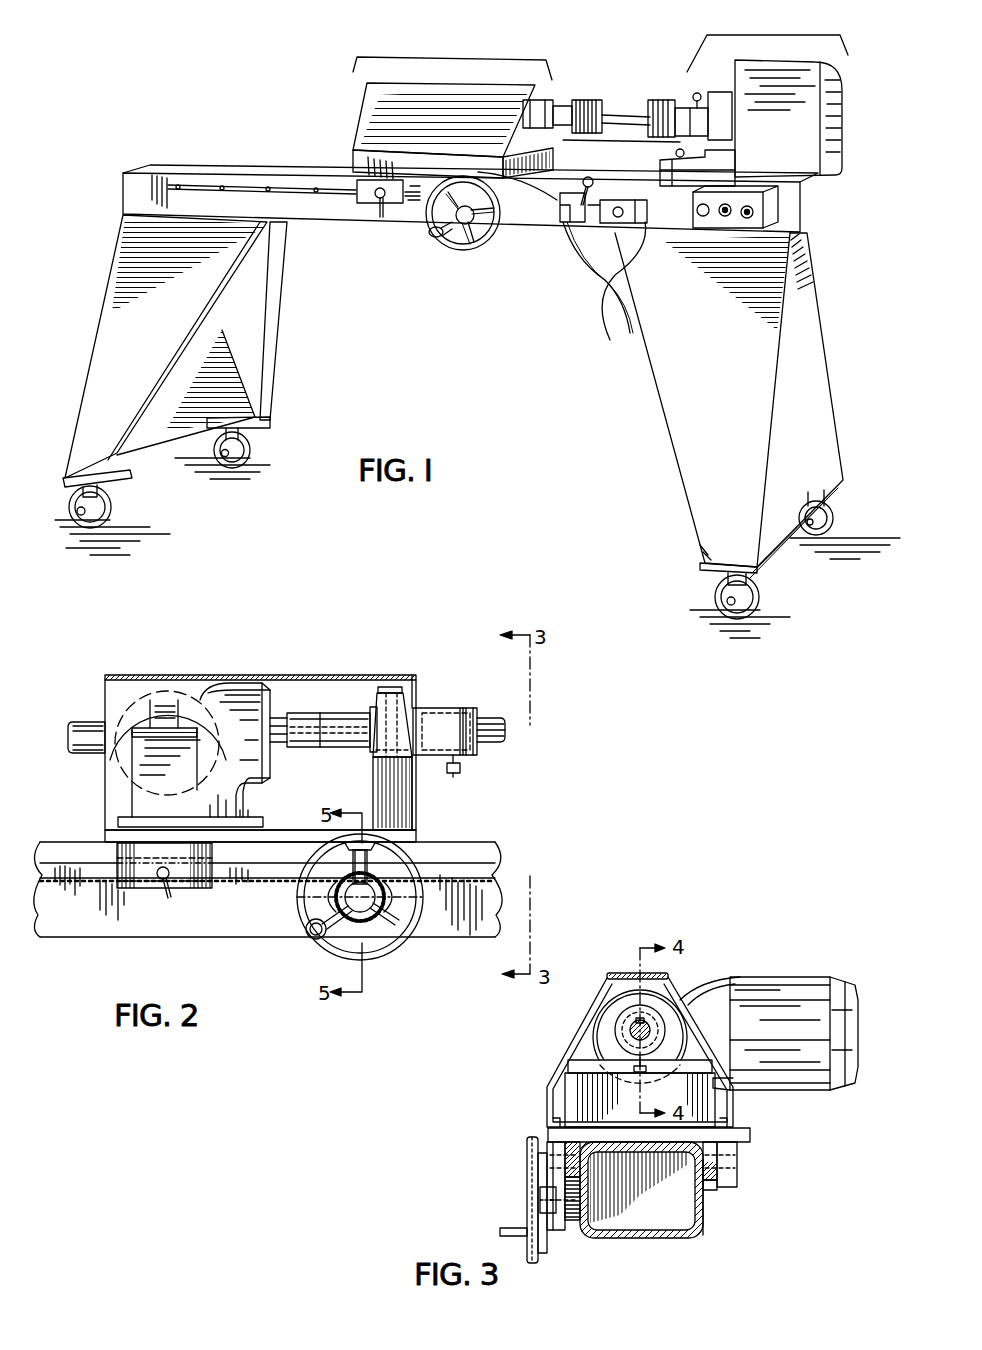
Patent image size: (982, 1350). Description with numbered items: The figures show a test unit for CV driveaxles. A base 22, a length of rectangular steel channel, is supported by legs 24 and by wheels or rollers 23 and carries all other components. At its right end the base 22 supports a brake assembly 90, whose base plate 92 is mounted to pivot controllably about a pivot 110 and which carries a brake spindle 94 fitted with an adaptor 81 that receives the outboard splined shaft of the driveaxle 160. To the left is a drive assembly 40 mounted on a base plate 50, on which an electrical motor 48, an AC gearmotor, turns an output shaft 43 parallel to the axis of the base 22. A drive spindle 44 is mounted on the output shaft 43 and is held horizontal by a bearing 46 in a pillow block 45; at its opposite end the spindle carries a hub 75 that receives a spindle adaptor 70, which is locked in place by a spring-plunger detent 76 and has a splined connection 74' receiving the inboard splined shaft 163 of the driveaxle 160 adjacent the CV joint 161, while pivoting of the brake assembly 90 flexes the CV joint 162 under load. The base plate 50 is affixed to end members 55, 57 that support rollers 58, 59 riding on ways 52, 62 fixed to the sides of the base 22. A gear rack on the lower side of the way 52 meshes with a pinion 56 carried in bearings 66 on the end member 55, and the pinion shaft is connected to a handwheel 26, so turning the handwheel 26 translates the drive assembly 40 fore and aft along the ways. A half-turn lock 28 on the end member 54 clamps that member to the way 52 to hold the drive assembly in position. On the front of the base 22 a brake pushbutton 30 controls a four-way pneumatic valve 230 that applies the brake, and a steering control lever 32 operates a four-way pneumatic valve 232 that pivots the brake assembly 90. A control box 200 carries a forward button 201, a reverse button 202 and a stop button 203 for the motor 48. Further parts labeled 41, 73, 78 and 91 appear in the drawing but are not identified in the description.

In FIG. 1, the base 22 is at (287, 173).
In FIG. 2, the base 22 is at (268, 912).
In FIG. 3, the base 22 is at (668, 1238).
In FIG. 1, the wheels or rollers 23 is at (737, 618).
In FIG. 1, the legs 24 is at (262, 357).
In FIG. 1, the handwheel 26 is at (470, 257).
In FIG. 2, the handwheel 26 is at (379, 955).
In FIG. 3, the handwheel 26 is at (527, 1157).
In FIG. 1, the half-turn lock 28 is at (373, 200).
In FIG. 2, the half-turn lock 28 is at (157, 878).
In FIG. 1, the brake pushbutton 30 is at (577, 212).
In FIG. 1, the steering control lever 32 is at (570, 227).
In FIG. 1, the drive assembly 40 is at (437, 57).
In FIG. 2, the gear housing 41 is at (346, 676).
In FIG. 3, the gear housing 41 is at (607, 982).
In FIG. 2, the output shaft 43 is at (280, 720).
In FIG. 1, the drive spindle 44 is at (540, 100).
In FIG. 2, the drive spindle 44 is at (335, 718).
In FIG. 2, the pillow block 45 is at (391, 692).
In FIG. 3, the pillow block 45 is at (598, 1015).
In FIG. 2, the bearing 46 is at (374, 716).
In FIG. 2, the electrical motor 48 is at (132, 712).
In FIG. 3, the electrical motor 48 is at (795, 978).
In FIG. 2, the base plate 50 is at (414, 838).
In FIG. 3, the base plate 50 is at (583, 1133).
In FIG. 2, the way 52 is at (78, 870).
In FIG. 3, the way 52 is at (580, 1173).
In FIG. 2, the end member 54 is at (192, 884).
In FIG. 2, the end member 55 is at (318, 904).
In FIG. 3, the end member 55 is at (560, 1230).
In FIG. 2, the pinion 56 is at (320, 888).
In FIG. 3, the pinion 56 is at (572, 1220).
In FIG. 3, the end member 57 is at (730, 1184).
In FIG. 3, the roller 58 is at (573, 1147).
In FIG. 3, the roller 59 is at (730, 1140).
In FIG. 3, the way 62 is at (704, 1182).
In FIG. 3, the bearings 66 is at (553, 1203).
In FIG. 1, the spindle adaptor 70 is at (556, 106).
In FIG. 2, the spindle adaptor 70 is at (472, 757).
In FIG. 3, the spindle adaptor 70 is at (665, 1015).
In FIG. 3, the bearing 73 is at (668, 1016).
In FIG. 3, the splined connection 74' is at (585, 1036).
In FIG. 2, the hub 75 is at (440, 708).
In FIG. 2, the detent means 76 is at (455, 774).
In FIG. 2, the bushing 78 is at (307, 717).
In FIG. 1, the adaptor 81 is at (676, 110).
In FIG. 1, the brake assembly 90 is at (787, 89).
In FIG. 1, the drive motor 91 is at (835, 107).
In FIG. 1, the base plate 92 is at (627, 226).
In FIG. 1, the brake spindle 94 is at (720, 97).
In FIG. 1, the pivot 110 is at (681, 152).
In FIG. 1, the driveaxle 160 is at (614, 152).
In FIG. 1, the CV joint 161 is at (605, 113).
In FIG. 1, the CV joint 162 is at (651, 104).
In FIG. 1, the first end 163 is at (574, 103).
In FIG. 2, the first end 163 is at (493, 711).
In FIG. 1, the control box 200 is at (760, 270).
In FIG. 1, the forward button 201 is at (748, 218).
In FIG. 1, the reverse button 202 is at (725, 217).
In FIG. 1, the stop button 203 is at (703, 217).
In FIG. 1, the four-way pneumatic valve 230 is at (498, 179).
In FIG. 1, the four-way pneumatic valve 232 is at (604, 240).